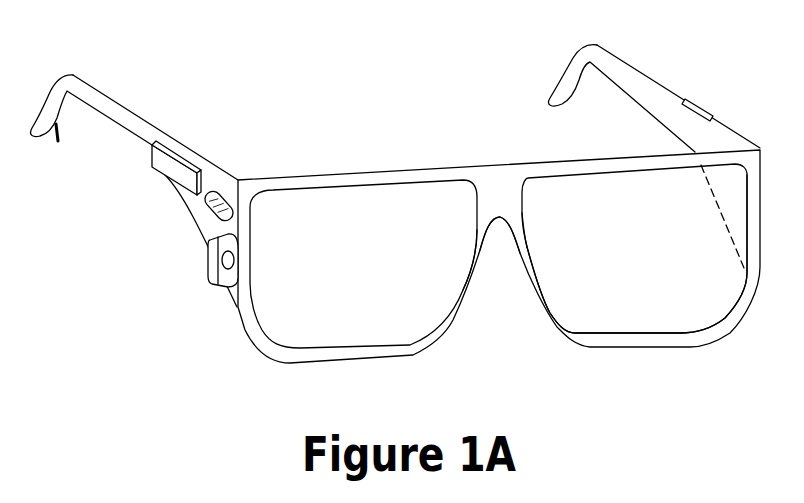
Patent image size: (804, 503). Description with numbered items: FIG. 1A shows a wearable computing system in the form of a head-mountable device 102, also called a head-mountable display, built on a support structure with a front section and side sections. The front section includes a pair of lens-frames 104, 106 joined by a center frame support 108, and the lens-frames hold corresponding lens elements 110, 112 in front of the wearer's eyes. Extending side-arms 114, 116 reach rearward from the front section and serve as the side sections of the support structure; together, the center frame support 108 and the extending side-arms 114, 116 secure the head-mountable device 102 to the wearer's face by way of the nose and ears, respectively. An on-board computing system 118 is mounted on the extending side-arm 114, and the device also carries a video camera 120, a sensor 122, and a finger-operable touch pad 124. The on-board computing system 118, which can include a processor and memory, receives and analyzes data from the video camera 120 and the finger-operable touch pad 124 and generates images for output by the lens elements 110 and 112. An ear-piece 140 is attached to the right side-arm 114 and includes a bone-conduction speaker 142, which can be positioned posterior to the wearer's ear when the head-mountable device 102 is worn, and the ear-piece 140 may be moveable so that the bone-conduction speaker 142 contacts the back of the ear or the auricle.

The head-mountable device 102 is at (342, 78).
The lens-frame 104 is at (338, 178).
The lens-frame 106 is at (580, 164).
The center frame support 108 is at (498, 186).
The lens element 110 is at (308, 328).
The lens element 112 is at (653, 313).
The extending side-arm 114 is at (173, 143).
The extending side-arm 116 is at (657, 82).
The on-board computing system 118 is at (172, 165).
The video camera 120 is at (210, 254).
The sensor 122 is at (703, 105).
The finger-operable touch pad 124 is at (208, 207).
The ear-piece 140 is at (74, 126).
The bone-conduction speaker 142 is at (57, 130).